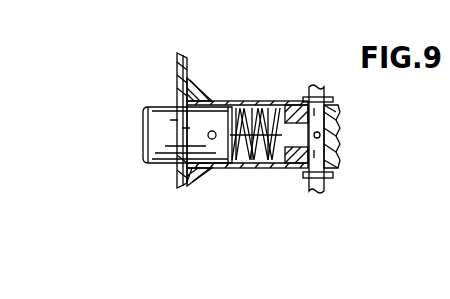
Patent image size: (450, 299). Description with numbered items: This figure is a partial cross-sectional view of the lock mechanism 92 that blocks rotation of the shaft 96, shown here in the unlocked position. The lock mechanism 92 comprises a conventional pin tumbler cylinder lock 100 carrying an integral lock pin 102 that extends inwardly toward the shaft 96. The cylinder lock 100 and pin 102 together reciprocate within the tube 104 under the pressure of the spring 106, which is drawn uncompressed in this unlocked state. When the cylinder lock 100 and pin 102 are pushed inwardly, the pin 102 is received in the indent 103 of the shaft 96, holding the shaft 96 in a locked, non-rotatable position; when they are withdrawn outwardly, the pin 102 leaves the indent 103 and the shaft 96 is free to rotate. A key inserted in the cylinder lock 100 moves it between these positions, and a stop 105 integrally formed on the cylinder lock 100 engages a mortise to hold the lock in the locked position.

The lock mechanism 92 is at (133, 185).
The shaft 96 is at (333, 111).
The cylinder lock 100 is at (160, 137).
The lock pin 102 is at (243, 168).
The indent 103 is at (336, 136).
The tube 104 is at (240, 101).
The stop 105 is at (209, 131).
The spring 106 is at (270, 168).